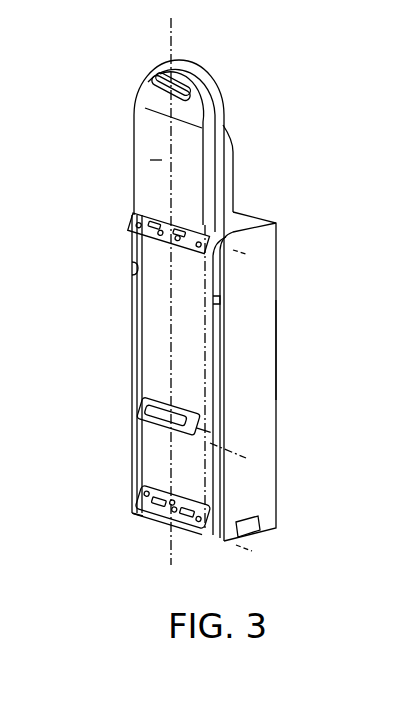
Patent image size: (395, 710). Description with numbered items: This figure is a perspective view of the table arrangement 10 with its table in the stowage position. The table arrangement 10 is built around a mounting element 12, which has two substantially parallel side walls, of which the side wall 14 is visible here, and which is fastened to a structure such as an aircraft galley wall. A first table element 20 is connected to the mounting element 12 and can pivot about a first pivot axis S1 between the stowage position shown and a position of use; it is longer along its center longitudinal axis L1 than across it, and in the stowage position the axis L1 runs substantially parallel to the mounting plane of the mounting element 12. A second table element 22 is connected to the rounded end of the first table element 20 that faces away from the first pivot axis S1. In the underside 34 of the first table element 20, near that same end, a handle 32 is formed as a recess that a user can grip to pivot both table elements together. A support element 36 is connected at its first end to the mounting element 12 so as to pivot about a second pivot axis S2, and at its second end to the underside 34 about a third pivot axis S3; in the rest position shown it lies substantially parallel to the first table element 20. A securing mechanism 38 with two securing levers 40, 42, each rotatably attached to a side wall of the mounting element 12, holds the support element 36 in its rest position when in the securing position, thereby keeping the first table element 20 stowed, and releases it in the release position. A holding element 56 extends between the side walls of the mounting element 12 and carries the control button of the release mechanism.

The table arrangement 10 is at (240, 68).
The center longitudinal axis L1 is at (172, 40).
The mounting element 12 is at (282, 249).
The side wall 14 is at (268, 350).
The first table element 20 is at (134, 117).
The second table element 22 is at (236, 170).
The handle 32 is at (158, 82).
The underside 34 is at (160, 160).
The support element 36 is at (132, 297).
The securing mechanism 38 is at (132, 320).
The securing lever 40 is at (132, 268).
The securing lever 42 is at (218, 300).
The holding element 56 is at (258, 222).
The first pivot axis S1 is at (126, 414).
The second pivot axis S2 is at (126, 507).
The third pivot axis S3 is at (128, 215).